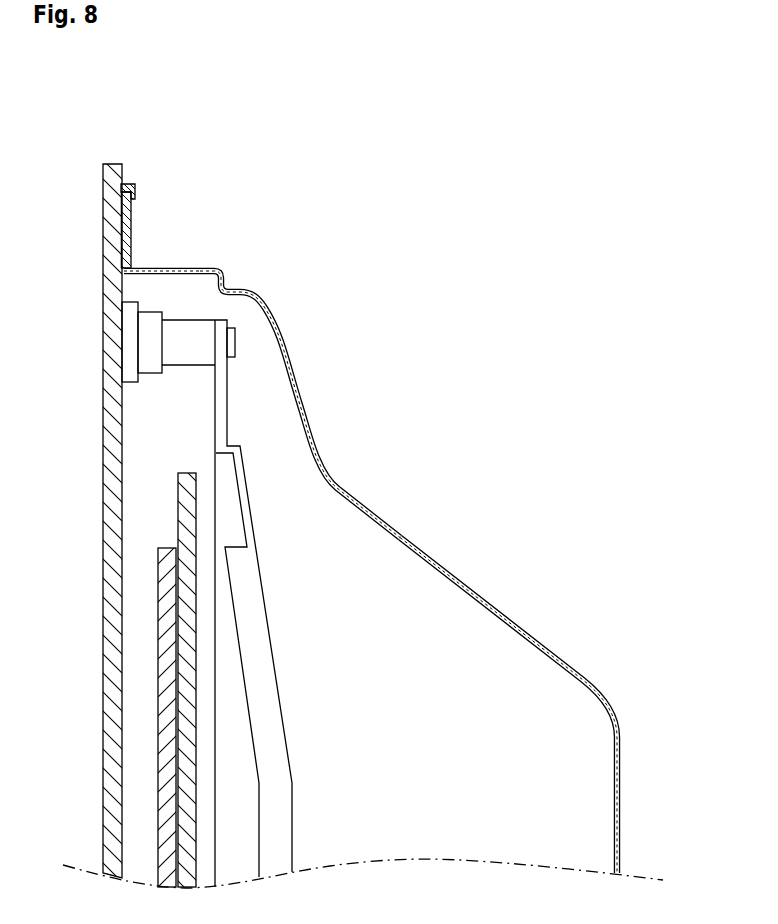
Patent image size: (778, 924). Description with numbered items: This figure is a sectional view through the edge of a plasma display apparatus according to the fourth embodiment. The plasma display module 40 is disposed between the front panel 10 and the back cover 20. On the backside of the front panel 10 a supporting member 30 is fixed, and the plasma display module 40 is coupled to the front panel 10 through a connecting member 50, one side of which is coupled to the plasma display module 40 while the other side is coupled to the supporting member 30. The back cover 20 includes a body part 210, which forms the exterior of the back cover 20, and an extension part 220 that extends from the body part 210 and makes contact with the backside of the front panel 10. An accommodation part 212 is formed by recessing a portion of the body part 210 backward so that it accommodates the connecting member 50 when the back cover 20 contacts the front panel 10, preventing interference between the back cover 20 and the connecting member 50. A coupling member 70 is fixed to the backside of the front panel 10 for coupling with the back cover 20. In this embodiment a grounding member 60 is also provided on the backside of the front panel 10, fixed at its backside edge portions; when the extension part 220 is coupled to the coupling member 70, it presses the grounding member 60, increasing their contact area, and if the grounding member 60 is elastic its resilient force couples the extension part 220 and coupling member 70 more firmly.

The front panel 10 is at (109, 168).
The back cover 20 is at (370, 515).
The body part 210 is at (387, 523).
The accommodation part 212 is at (287, 343).
The extension part 220 is at (132, 217).
The supporting member 30 is at (130, 342).
The plasma display module 40 is at (138, 622).
The connecting member 50 is at (270, 718).
The grounding member 60 is at (122, 233).
The coupling member 70 is at (125, 183).